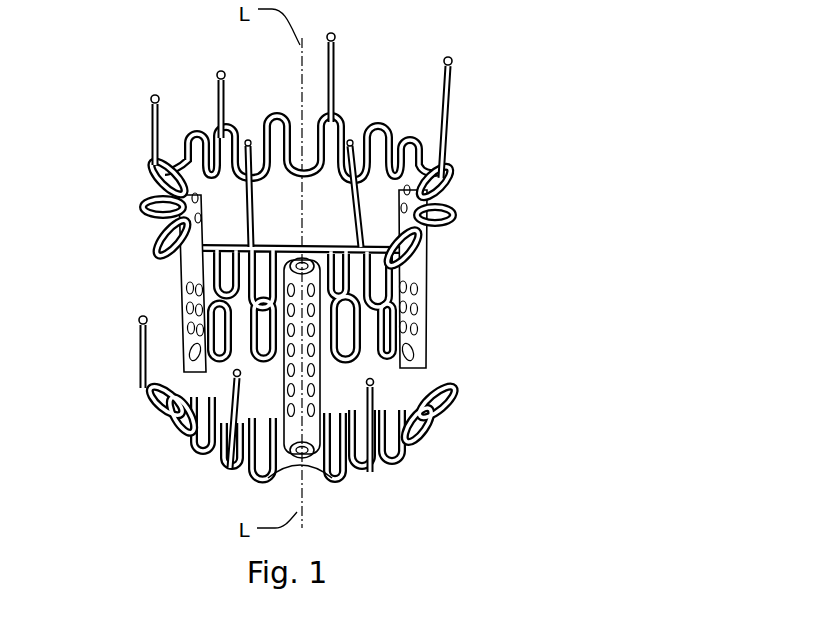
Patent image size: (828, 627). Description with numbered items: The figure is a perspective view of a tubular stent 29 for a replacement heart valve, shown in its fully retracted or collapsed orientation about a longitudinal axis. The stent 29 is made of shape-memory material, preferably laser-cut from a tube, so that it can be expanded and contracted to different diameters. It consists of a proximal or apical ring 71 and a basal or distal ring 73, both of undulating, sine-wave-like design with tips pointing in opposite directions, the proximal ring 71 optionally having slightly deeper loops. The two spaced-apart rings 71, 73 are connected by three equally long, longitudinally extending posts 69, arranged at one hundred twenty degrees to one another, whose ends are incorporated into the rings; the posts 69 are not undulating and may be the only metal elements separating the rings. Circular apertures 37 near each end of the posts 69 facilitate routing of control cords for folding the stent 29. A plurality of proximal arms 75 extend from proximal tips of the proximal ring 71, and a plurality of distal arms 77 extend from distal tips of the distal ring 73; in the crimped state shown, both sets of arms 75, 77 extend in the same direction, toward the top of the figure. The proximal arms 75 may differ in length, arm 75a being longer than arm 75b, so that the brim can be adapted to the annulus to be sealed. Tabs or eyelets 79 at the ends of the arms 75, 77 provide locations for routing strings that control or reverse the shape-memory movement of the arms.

The tubular stent 29 is at (233, 483).
The circular apertures 37 is at (294, 262).
The longitudinally extending posts 69 is at (195, 298).
The proximal ring 71 is at (156, 207).
The distal ring 73 is at (172, 418).
The proximal arms 75 is at (449, 112).
The proximal arm 75a is at (337, 78).
The proximal arm 75b is at (157, 138).
The distal arms 77 is at (143, 355).
The eyelets 79 is at (155, 95).